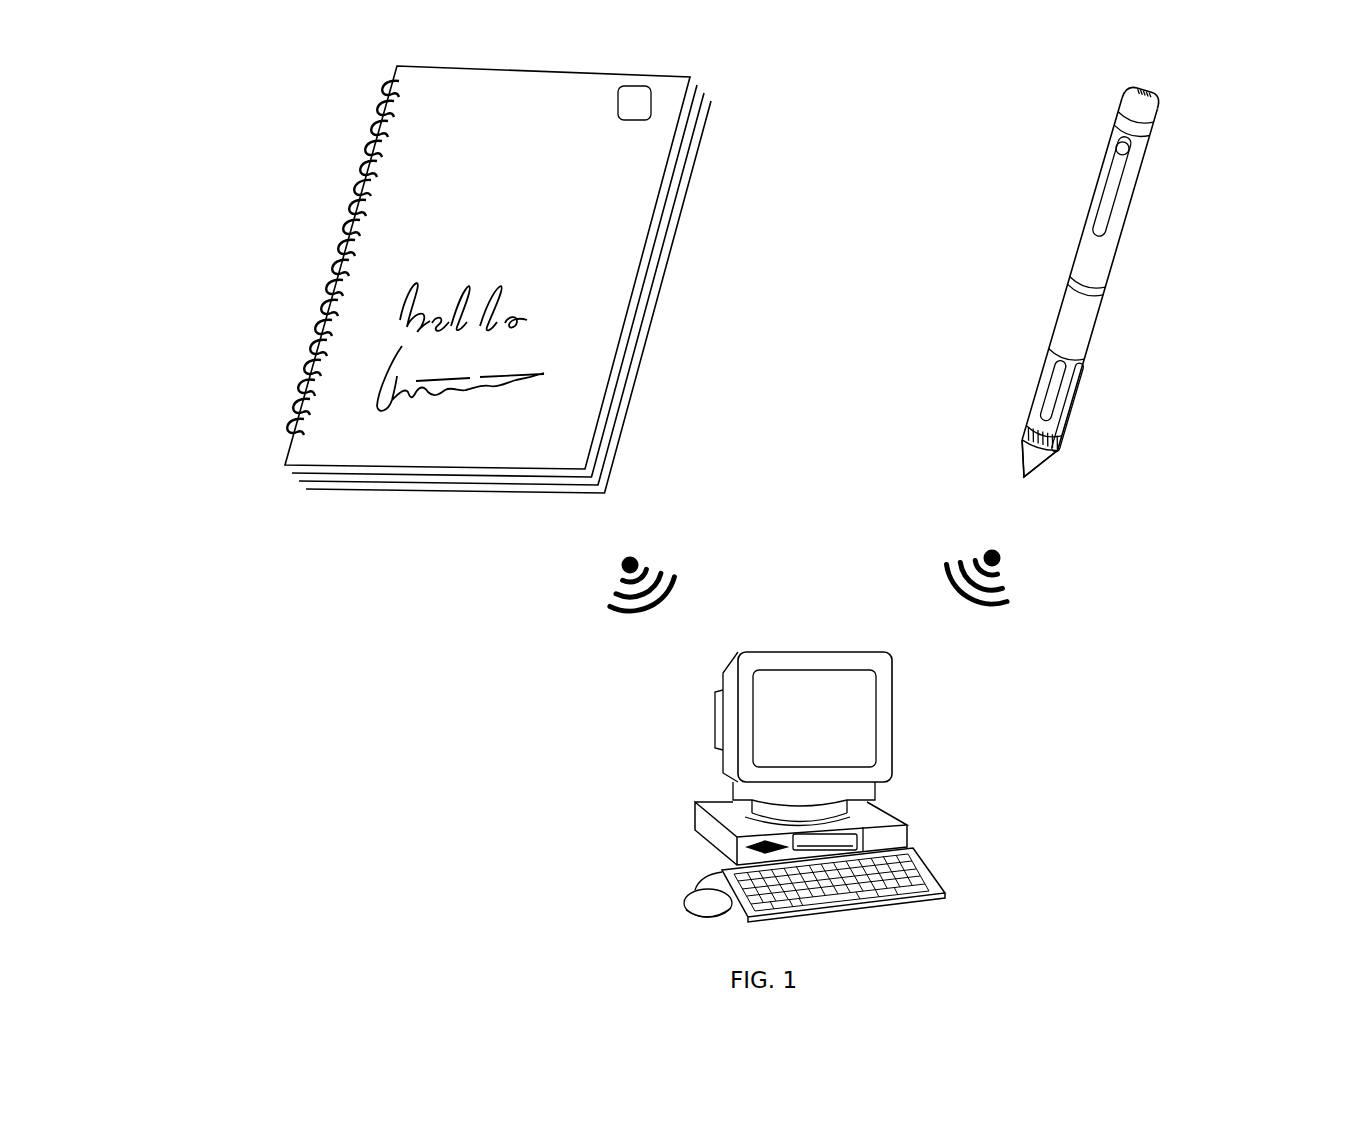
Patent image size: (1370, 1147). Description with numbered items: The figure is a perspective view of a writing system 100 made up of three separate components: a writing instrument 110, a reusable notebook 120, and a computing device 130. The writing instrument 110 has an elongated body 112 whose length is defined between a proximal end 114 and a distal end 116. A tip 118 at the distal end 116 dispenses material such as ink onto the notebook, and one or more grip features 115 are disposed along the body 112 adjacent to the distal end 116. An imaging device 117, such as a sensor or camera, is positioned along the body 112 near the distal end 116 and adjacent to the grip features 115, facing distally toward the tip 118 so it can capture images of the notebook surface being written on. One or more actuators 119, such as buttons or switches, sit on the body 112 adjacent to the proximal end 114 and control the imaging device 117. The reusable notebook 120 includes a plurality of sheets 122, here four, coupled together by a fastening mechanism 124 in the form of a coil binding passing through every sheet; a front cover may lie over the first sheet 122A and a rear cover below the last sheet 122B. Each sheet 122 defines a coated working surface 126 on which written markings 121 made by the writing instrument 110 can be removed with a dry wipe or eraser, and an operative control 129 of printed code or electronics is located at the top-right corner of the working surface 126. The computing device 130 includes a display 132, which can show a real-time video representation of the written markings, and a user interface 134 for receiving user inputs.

The writing system 100 is at (320, 747).
The writing instrument 110 is at (1207, 195).
The body 112 is at (1105, 263).
The proximal end 114 is at (1150, 92).
The grip feature 115 is at (1052, 395).
The distal end 116 is at (1070, 463).
The imaging device 117 is at (1060, 427).
The tip 118 is at (1008, 467).
The actuator 119 is at (1122, 148).
The reusable notebook 120 is at (262, 130).
The written markings 121 is at (377, 382).
The sheets 122 is at (647, 265).
The first sheet 122A is at (573, 401).
The last sheet 122B is at (688, 173).
The fastening mechanism 124 is at (320, 308).
The working surface 126 is at (516, 230).
The operative control 129 is at (640, 102).
The computing device 130 is at (653, 725).
The display 132 is at (838, 708).
The user interface 134 is at (902, 865).